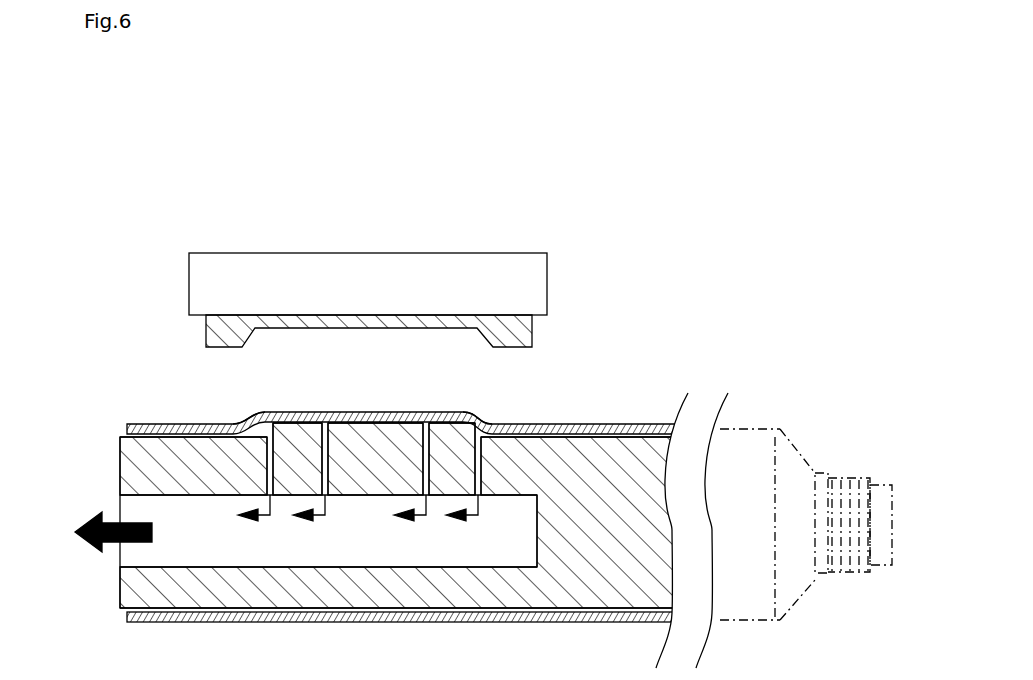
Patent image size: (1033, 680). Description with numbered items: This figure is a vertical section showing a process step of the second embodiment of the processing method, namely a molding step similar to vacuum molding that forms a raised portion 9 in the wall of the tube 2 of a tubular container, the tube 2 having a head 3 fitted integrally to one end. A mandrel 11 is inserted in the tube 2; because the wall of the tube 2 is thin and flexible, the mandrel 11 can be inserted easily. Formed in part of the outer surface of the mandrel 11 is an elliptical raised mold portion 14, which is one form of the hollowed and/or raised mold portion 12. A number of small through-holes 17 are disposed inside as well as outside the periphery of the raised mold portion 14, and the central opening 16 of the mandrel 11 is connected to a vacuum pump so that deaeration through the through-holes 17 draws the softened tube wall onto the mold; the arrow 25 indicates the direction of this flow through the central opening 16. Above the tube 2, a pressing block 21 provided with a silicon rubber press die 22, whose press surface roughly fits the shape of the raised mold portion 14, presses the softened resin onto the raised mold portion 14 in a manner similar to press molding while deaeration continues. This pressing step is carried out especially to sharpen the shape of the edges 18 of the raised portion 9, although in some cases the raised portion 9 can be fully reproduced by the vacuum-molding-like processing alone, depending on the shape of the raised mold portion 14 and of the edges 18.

The tube 2 is at (593, 423).
The head 3 is at (830, 440).
The raised portion 9 is at (352, 417).
The mandrel 11 is at (153, 460).
The hollowed and/or raised mold portion 12 is at (437, 428).
The raised mold portion 14 is at (464, 377).
The central opening 16 is at (120, 552).
The small through-holes 17 is at (421, 442).
The edges 18 is at (255, 420).
The pressing block 21 is at (428, 277).
The silicon rubber press die 22 is at (220, 330).
The flow direction 25 is at (95, 512).